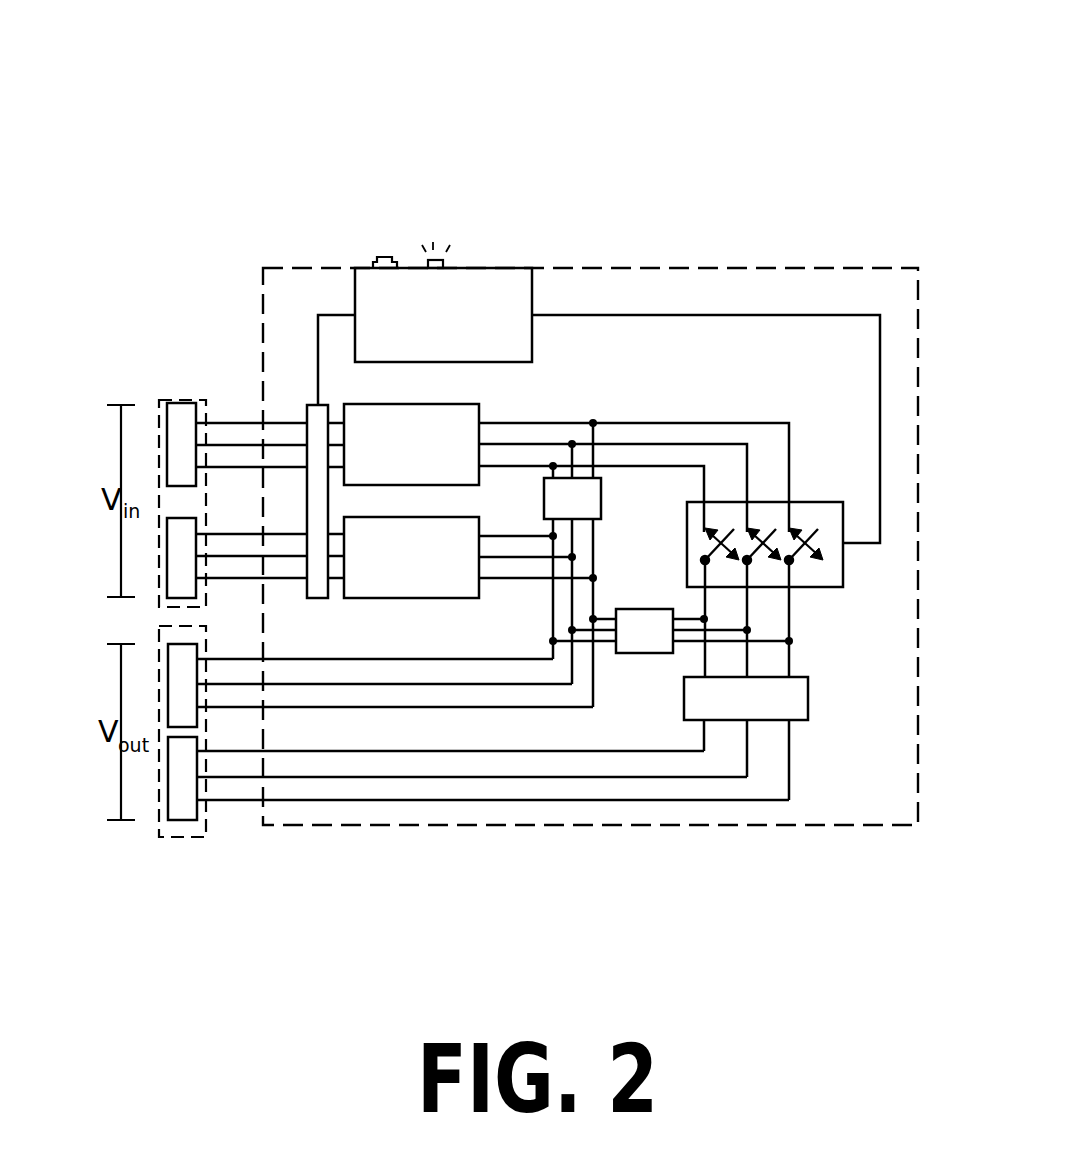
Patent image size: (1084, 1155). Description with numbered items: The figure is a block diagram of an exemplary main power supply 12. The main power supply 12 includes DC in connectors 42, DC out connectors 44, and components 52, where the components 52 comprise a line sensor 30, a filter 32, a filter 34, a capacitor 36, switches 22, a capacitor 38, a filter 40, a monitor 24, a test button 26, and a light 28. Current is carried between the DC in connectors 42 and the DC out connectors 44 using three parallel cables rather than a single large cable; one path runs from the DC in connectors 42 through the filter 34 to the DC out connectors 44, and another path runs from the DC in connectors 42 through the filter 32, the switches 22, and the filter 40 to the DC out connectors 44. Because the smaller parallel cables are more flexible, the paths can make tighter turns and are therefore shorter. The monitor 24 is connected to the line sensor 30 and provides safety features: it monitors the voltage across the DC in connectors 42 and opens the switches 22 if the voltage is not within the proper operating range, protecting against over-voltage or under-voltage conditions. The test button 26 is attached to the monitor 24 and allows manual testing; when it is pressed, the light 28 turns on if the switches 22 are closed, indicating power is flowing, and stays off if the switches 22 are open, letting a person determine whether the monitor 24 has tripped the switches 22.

The main power supply 12 is at (648, 62).
The switches 22 is at (826, 502).
The monitor 24 is at (533, 300).
The test button 26 is at (373, 265).
The light 28 is at (443, 264).
The line sensor 30 is at (307, 405).
The filter 32 is at (482, 409).
The filter 34 is at (478, 515).
The capacitor 36 is at (601, 498).
The capacitor 38 is at (620, 609).
The filter 40 is at (808, 687).
The DC in connectors 42 is at (197, 399).
The DC out connectors 44 is at (207, 637).
The components 52 is at (603, 268).